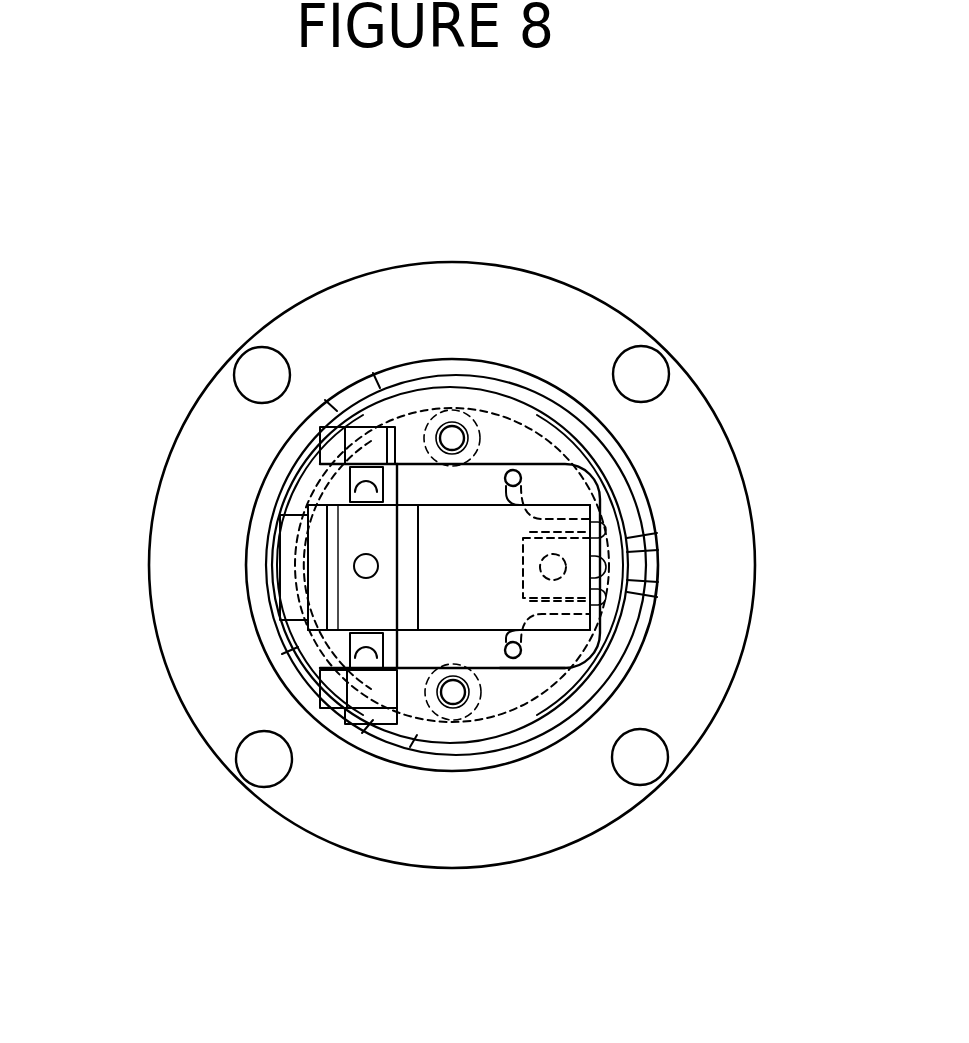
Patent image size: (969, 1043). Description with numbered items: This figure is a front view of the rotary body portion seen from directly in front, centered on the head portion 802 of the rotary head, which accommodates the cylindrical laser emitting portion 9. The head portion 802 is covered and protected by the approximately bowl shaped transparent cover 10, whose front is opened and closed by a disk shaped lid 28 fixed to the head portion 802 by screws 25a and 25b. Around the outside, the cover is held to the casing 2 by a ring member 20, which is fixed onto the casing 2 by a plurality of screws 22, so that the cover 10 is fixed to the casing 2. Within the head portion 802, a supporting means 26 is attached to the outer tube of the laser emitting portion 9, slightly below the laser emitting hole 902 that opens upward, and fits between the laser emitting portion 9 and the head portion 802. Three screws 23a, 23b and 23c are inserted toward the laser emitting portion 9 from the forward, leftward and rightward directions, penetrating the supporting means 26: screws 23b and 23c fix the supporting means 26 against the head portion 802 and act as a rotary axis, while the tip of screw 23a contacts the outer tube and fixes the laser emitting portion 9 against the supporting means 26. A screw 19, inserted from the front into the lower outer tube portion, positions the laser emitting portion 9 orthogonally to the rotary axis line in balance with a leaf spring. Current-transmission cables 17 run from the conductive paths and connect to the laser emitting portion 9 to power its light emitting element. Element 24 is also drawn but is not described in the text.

The casing 2 is at (72, 637).
The laser emitting portion 9 is at (470, 595).
The cover 10 is at (653, 510).
The current-transmission cables 17 is at (557, 680).
The screw 19 is at (562, 573).
The ring member 20 is at (717, 468).
The screws 22 is at (262, 372).
The screw 23a is at (375, 630).
The screw 23b is at (370, 417).
The screw 23c is at (372, 722).
The plate 24 is at (408, 415).
The screw 25a is at (475, 417).
The screw 25b is at (457, 705).
The supporting means 26 is at (367, 527).
The lid 28 is at (557, 680).
The head portion 802 is at (507, 417).
The laser emitting hole 902 is at (290, 552).